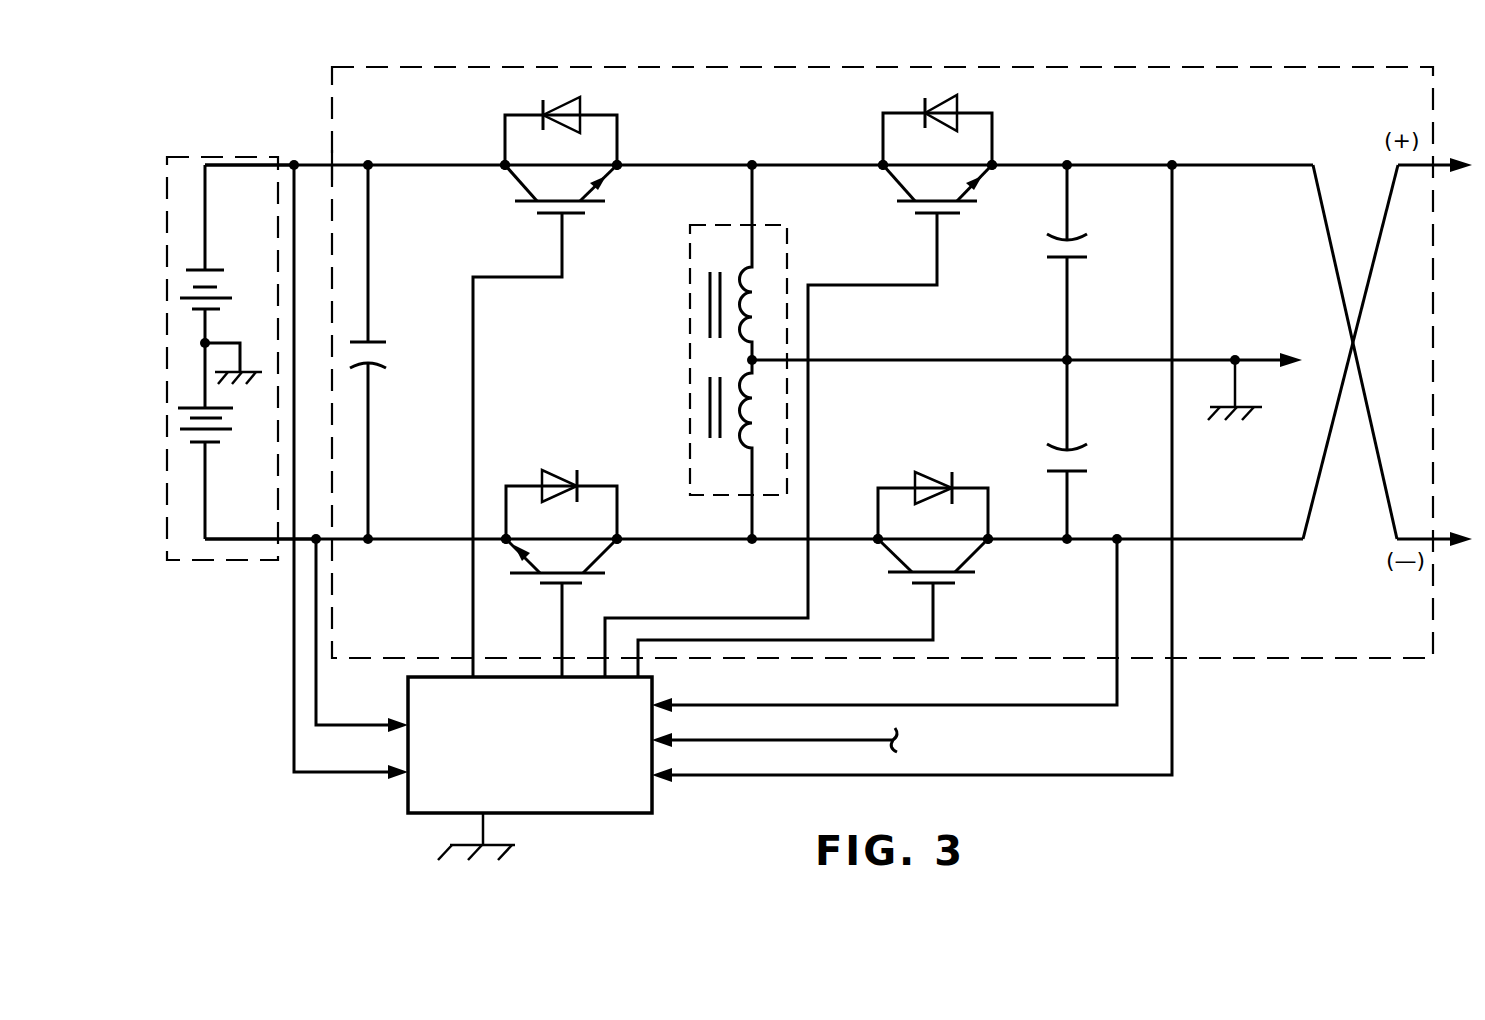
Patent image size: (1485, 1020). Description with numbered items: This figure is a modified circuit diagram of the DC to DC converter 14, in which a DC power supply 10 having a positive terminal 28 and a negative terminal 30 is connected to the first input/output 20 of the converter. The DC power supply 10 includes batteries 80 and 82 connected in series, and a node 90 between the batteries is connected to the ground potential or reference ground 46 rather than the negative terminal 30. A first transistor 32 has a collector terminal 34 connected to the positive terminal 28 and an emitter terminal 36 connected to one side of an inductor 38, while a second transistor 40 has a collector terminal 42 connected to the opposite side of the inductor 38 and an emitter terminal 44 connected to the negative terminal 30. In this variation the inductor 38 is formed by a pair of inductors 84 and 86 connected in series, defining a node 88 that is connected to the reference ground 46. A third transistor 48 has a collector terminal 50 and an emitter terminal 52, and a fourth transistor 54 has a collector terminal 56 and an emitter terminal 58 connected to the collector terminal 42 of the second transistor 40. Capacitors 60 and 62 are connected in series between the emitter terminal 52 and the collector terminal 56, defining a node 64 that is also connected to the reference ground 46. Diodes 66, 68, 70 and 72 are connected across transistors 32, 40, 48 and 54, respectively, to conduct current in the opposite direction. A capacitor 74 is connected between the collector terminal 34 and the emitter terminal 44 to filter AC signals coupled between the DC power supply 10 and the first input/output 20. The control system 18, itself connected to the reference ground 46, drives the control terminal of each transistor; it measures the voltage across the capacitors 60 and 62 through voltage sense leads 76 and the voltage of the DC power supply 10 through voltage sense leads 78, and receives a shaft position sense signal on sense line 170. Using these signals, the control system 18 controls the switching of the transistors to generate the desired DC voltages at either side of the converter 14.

The DC power supply 10 is at (190, 157).
The DC to DC converter 14 is at (1388, 658).
The control system 18 is at (604, 813).
The first input/output 20 is at (325, 205).
The positive terminal 28 is at (210, 160).
The negative terminal 30 is at (210, 540).
The first transistor 32 is at (512, 187).
The collector terminal 34 is at (503, 160).
The emitter terminal 36 is at (620, 160).
The inductor 38 is at (787, 262).
The second transistor 40 is at (603, 553).
The collector terminal 42 is at (620, 534).
The emitter terminal 44 is at (505, 535).
The reference ground 46 is at (256, 376).
The third transistor 48 is at (975, 182).
The collector terminal 50 is at (880, 160).
The emitter terminal 52 is at (995, 160).
The fourth transistor 54 is at (975, 550).
The collector terminal 56 is at (991, 534).
The emitter terminal 58 is at (876, 533).
The capacitor 60 is at (1078, 225).
The capacitor 62 is at (1078, 471).
The node 64 is at (1070, 358).
The diode 66 is at (560, 100).
The diode 68 is at (555, 478).
The diode 70 is at (940, 98).
The diode 72 is at (925, 470).
The capacitor 74 is at (380, 340).
The voltage sense leads 76 is at (1228, 718).
The voltage sense leads 78 is at (320, 698).
The battery 80 is at (208, 270).
The battery 82 is at (210, 446).
The inductor 84 is at (740, 318).
The inductor 86 is at (742, 412).
The node 88 is at (750, 360).
The node 90 is at (208, 342).
The sense line 170 is at (790, 738).